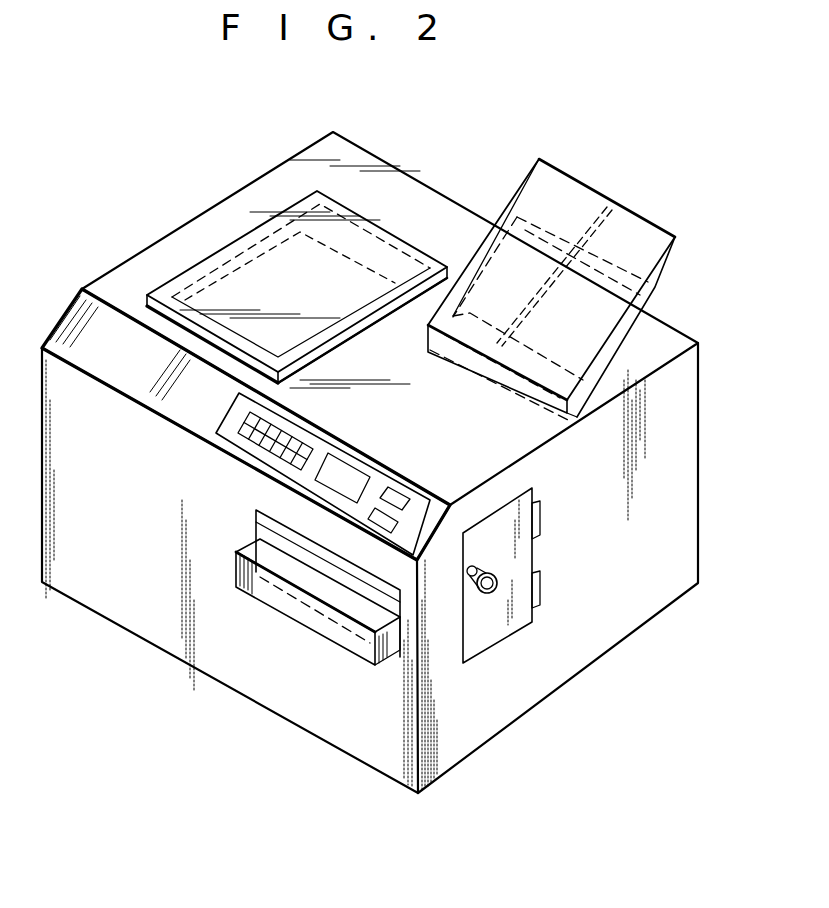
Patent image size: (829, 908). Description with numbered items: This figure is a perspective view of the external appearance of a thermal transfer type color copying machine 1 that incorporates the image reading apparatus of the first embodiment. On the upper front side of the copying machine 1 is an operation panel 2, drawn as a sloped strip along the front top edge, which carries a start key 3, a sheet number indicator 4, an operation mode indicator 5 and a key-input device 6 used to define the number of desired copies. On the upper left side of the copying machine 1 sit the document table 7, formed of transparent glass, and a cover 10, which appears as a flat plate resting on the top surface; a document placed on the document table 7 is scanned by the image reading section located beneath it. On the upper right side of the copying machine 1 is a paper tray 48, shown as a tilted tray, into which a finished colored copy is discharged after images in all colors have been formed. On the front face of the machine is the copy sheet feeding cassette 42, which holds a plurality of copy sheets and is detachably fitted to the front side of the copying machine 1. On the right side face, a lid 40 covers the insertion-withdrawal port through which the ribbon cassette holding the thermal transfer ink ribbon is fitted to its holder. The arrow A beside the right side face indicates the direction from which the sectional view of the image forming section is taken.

The copying machine 1 is at (498, 727).
The operation panel 2 is at (228, 420).
The start key 3 is at (383, 515).
The sheet number indicator 4 is at (410, 495).
The operation mode indicator 5 is at (335, 490).
The key-input device 6 is at (253, 435).
The document table 7 is at (203, 270).
The cover 10 is at (273, 215).
The lid 40 is at (478, 640).
The copy sheet feeding cassette 42 is at (342, 638).
The paper tray 48 is at (607, 205).
The arrow A is at (614, 581).